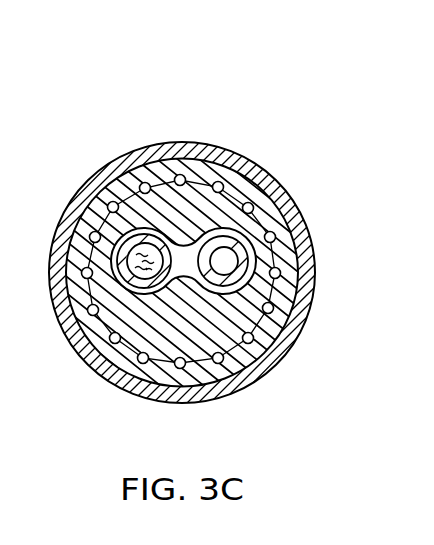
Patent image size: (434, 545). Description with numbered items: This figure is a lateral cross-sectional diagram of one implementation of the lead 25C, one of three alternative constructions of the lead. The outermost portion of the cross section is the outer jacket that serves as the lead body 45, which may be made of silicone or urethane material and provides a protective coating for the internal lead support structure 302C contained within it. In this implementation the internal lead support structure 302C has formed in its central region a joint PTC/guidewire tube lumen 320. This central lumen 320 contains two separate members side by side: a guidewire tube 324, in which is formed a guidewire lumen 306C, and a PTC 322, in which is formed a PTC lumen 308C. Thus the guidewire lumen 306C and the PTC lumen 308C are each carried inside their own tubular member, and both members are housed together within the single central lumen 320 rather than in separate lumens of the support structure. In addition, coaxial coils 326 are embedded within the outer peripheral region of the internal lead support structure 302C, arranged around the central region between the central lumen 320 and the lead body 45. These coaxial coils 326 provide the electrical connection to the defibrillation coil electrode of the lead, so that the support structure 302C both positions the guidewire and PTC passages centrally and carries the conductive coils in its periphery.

The lead 25C is at (86, 99).
The lead body 45 is at (248, 172).
The internal lead support structure 302C is at (236, 363).
The guidewire lumen 306C is at (234, 268).
The PTC lumen 308C is at (131, 264).
The joint PTC/guidewire tube lumen 320 is at (184, 251).
The PTC 322 is at (150, 298).
The guidewire tube 324 is at (254, 208).
The coaxial coils 326 is at (110, 204).